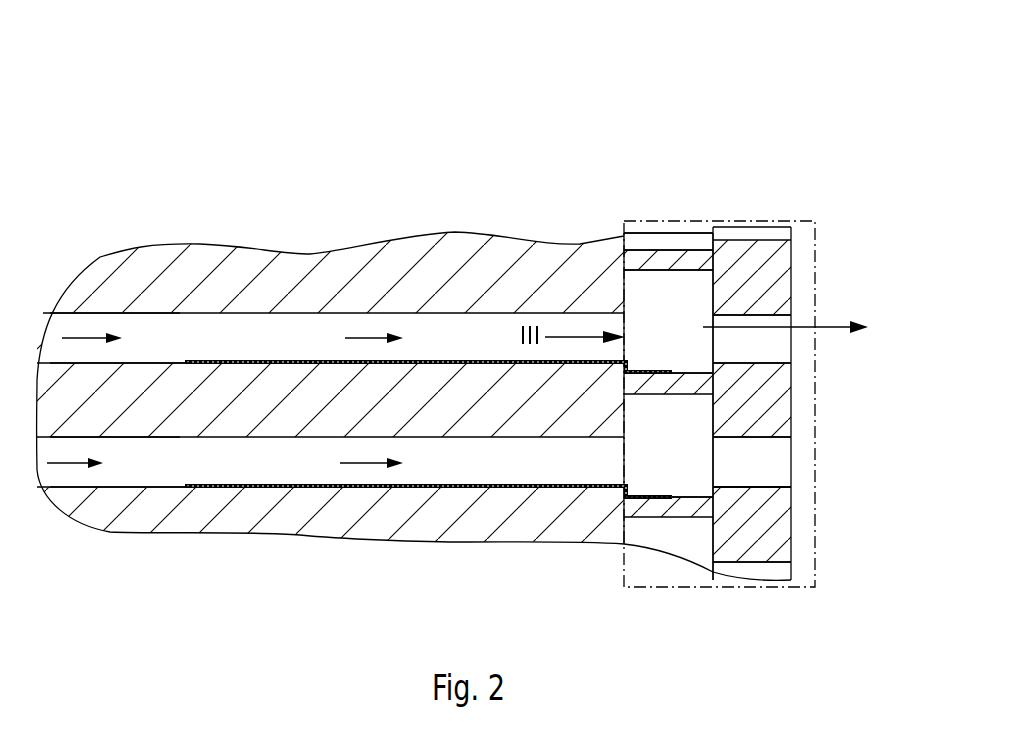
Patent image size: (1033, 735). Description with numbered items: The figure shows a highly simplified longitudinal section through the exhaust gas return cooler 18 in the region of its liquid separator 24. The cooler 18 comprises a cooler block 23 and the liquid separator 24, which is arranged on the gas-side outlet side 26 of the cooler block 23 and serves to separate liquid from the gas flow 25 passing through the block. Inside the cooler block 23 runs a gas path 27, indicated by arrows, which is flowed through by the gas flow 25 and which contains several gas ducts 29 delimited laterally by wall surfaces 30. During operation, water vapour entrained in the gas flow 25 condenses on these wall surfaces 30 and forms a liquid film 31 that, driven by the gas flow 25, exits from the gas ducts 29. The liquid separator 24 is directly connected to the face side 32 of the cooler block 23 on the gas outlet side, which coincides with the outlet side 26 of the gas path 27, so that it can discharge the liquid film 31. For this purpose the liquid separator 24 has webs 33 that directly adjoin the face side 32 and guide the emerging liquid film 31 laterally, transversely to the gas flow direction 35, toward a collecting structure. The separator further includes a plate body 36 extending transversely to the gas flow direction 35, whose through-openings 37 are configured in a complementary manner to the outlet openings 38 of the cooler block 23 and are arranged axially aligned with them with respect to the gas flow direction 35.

The exhaust gas return cooler 18 is at (826, 183).
The cooler block 23 is at (121, 533).
The liquid separator 24 is at (805, 268).
The gas flow 25 is at (365, 335).
The outlet side 26 is at (625, 280).
The gas path 27 is at (80, 338).
The gas ducts 29 is at (230, 330).
The wall surfaces 30 is at (165, 358).
The liquid film 31 is at (303, 358).
The face side 32 is at (668, 251).
The webs 33 is at (686, 258).
The gas flow direction 35 is at (838, 327).
The plate body 36 is at (808, 399).
The through-openings 37 is at (780, 355).
The outlet openings 38 is at (625, 340).